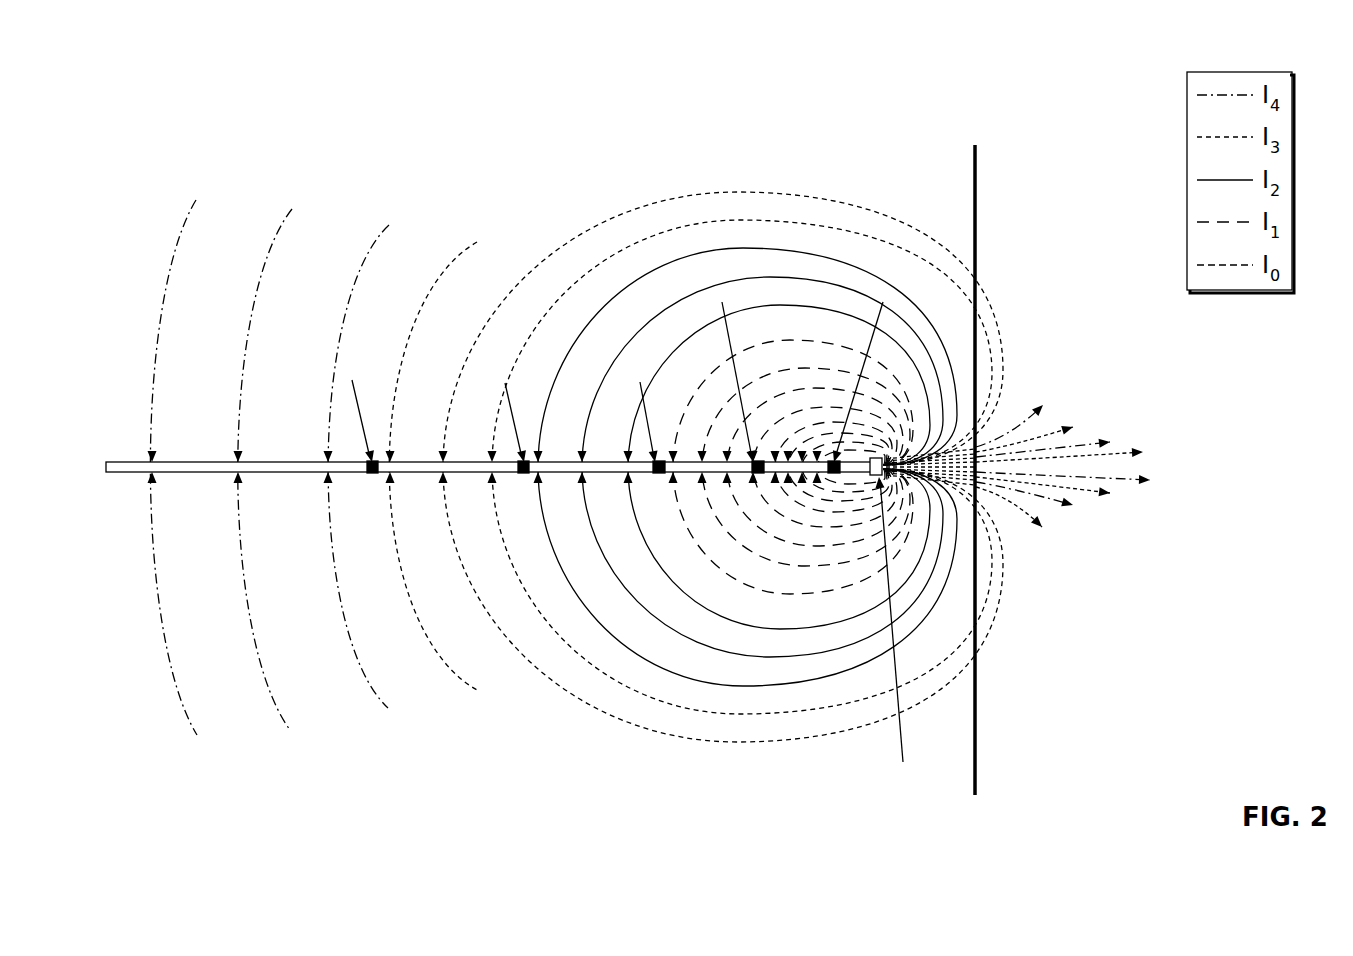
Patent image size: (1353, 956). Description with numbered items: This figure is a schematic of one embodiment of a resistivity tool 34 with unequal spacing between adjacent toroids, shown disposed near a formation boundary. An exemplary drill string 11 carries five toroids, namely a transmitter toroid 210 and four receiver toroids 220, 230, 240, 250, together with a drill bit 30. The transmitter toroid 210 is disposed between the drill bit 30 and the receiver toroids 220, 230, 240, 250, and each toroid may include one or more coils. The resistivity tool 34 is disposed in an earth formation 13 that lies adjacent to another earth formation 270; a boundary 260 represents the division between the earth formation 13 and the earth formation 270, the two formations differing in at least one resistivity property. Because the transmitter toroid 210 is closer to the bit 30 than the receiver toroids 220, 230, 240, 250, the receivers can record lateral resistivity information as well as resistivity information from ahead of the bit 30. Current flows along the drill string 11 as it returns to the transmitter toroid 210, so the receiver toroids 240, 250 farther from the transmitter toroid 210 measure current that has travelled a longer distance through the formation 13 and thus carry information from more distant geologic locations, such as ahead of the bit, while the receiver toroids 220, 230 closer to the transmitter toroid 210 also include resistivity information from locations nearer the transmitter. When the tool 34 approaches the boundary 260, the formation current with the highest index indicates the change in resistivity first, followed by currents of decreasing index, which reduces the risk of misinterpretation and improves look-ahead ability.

The drill string 11 is at (125, 462).
The earth formation 13 is at (474, 205).
The drill bit 30 is at (866, 476).
The resistivity tool 34 is at (458, 752).
The transmitter toroid 210 is at (833, 474).
The receiver toroid 220 is at (760, 474).
The receiver toroid 230 is at (655, 474).
The receiver toroid 240 is at (523, 474).
The receiver toroid 250 is at (372, 474).
The boundary 260 is at (978, 182).
The earth formation 270 is at (1081, 236).